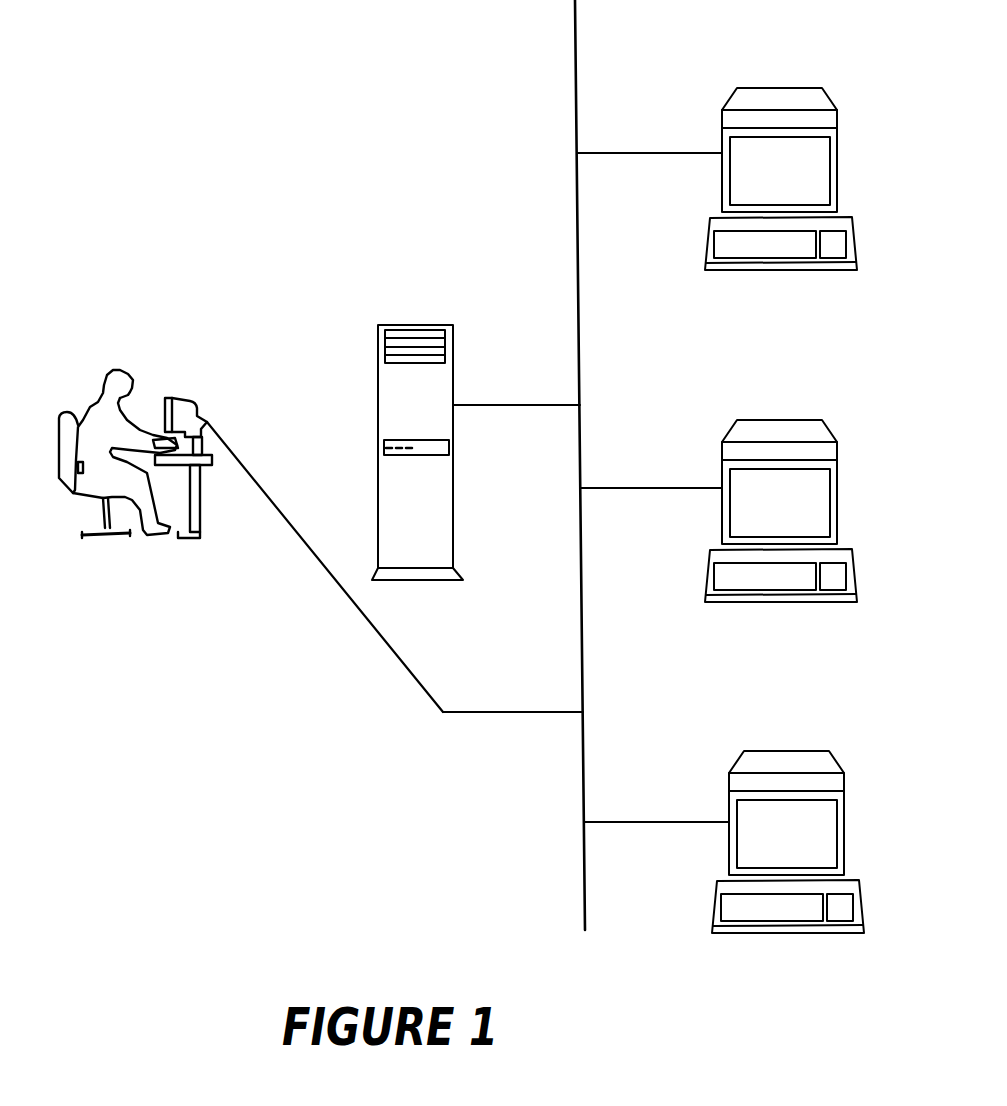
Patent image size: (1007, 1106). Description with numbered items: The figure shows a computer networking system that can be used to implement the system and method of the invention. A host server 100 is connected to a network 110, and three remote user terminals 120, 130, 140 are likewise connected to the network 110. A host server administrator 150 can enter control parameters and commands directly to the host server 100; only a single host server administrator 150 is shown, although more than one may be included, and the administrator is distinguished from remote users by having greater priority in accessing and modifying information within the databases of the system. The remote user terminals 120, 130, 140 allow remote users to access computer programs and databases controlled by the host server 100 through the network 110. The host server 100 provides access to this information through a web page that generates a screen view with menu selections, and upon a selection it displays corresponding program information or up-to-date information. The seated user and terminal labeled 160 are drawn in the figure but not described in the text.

The host server 100 is at (422, 325).
The network 110 is at (578, 447).
The remote user terminal 120 is at (722, 110).
The remote user terminal 130 is at (722, 440).
The remote user terminal 140 is at (729, 772).
The host server administrator 150 is at (183, 399).
The user 160 is at (122, 373).